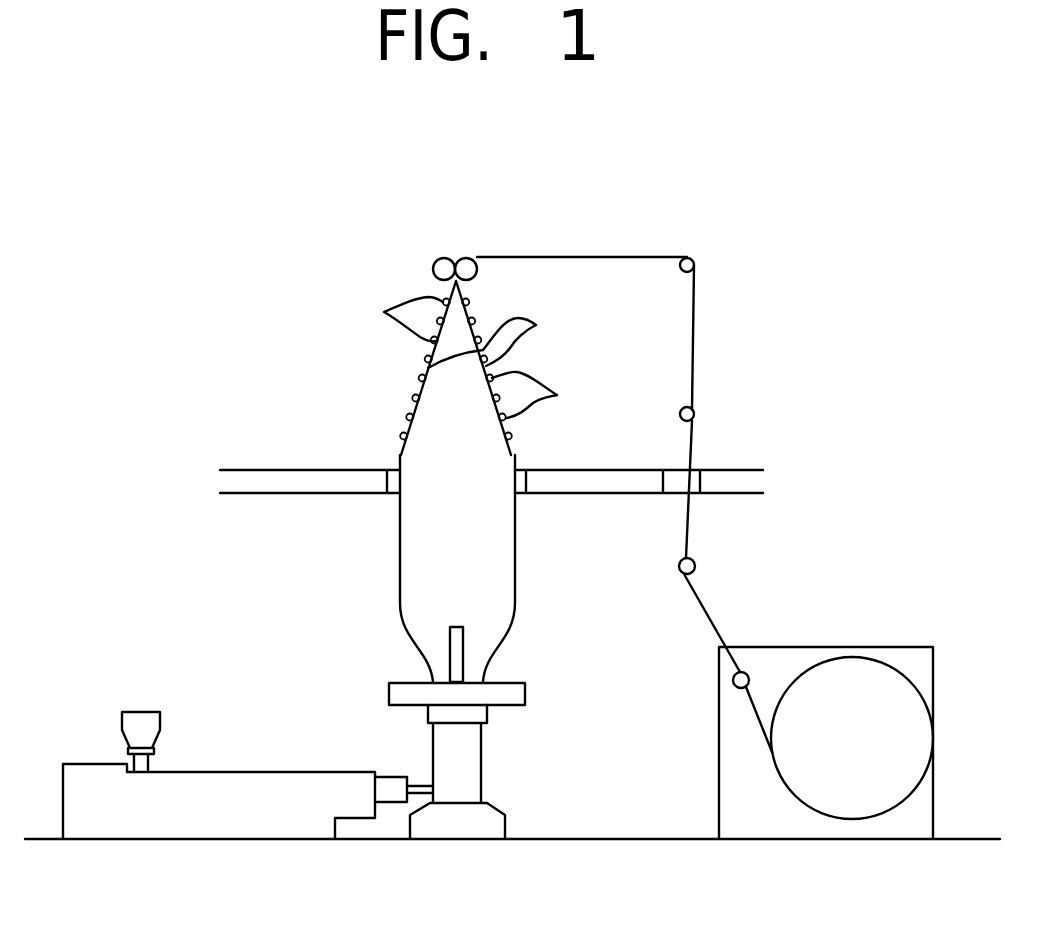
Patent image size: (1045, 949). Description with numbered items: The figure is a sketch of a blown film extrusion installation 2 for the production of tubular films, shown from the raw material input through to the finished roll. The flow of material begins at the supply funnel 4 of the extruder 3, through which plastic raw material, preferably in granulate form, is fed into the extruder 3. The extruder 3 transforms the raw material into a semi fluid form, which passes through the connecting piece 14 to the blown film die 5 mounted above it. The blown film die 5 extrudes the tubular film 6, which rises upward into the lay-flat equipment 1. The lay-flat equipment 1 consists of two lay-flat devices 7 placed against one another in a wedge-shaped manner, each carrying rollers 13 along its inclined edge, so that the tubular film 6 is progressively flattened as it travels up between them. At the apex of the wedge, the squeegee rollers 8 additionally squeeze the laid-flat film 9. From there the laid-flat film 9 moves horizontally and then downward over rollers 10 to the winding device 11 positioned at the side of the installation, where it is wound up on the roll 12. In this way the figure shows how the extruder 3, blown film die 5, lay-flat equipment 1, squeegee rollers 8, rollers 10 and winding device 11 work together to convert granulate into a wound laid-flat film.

The lay-flat equipment 1 is at (378, 402).
The blown film extrusion installation 2 is at (632, 215).
The extruder 3 is at (183, 860).
The supply funnel 4 is at (143, 712).
The blown film die 5 is at (463, 764).
The tubular film 6 is at (515, 560).
The lay-flat devices 7 is at (483, 368).
The squeegee rollers 8 is at (447, 257).
The laid-flat film 9 is at (545, 255).
The rollers 10 is at (697, 262).
The winding device 11 is at (870, 612).
The roll 12 is at (852, 798).
The rollers 13 is at (470, 355).
The connecting piece 14 is at (400, 802).